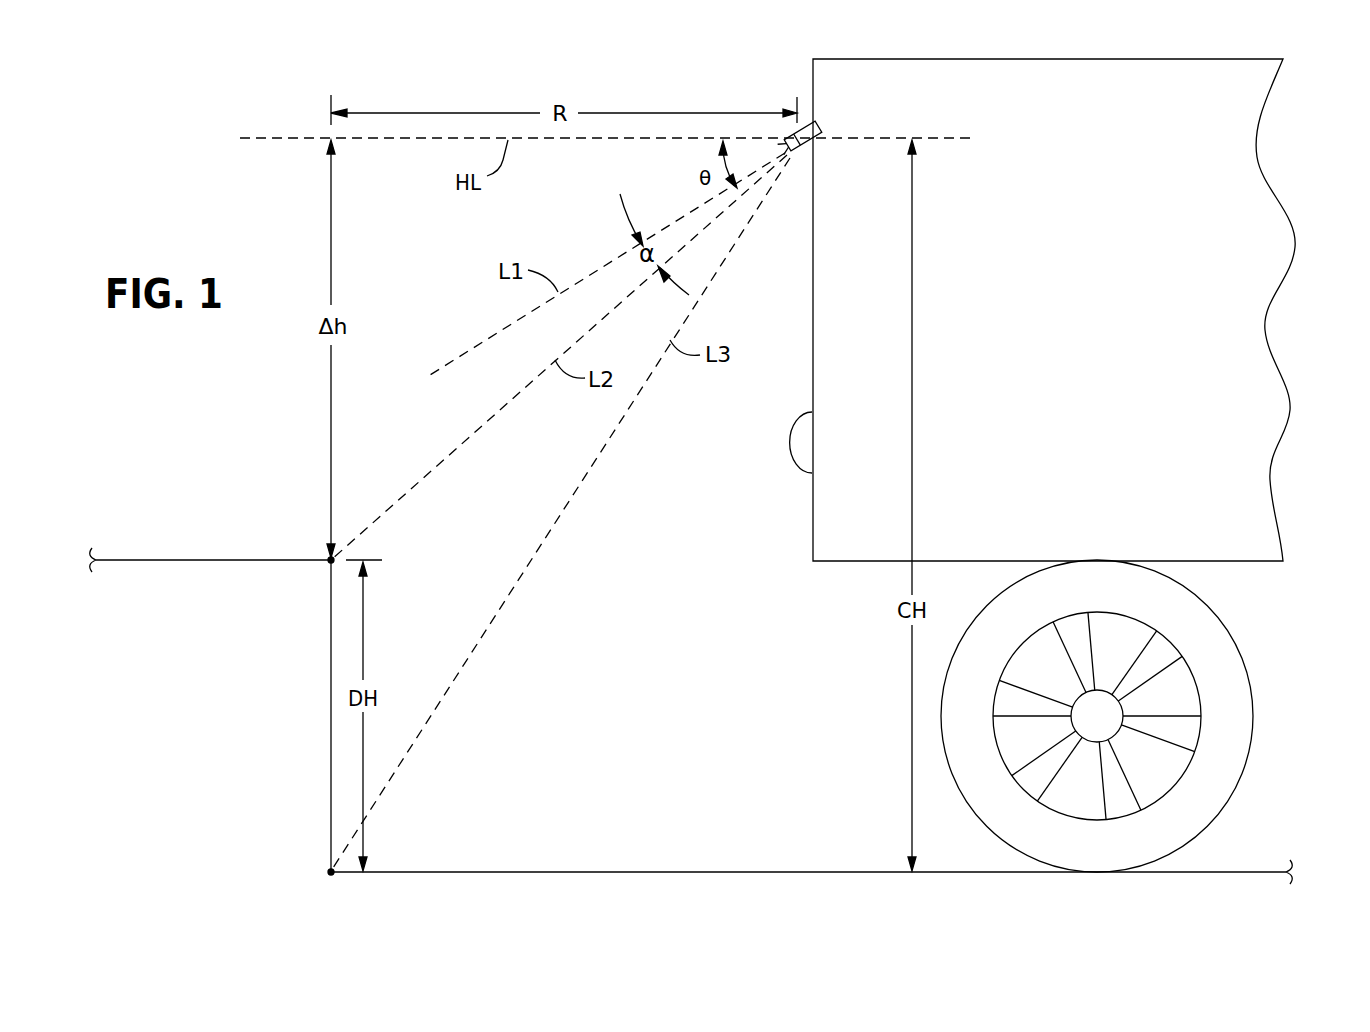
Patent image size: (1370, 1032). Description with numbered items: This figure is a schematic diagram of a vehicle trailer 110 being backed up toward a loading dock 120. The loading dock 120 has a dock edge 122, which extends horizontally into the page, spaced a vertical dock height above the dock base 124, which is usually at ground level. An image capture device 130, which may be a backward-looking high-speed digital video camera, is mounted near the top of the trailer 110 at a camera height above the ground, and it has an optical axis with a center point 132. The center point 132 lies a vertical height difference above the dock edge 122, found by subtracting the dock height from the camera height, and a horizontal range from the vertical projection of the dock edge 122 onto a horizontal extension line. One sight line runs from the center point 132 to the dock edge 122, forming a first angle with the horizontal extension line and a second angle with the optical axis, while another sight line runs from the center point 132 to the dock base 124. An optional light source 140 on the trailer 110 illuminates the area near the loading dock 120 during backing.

The vehicle trailer 110 is at (1230, 112).
The loading dock 120 is at (180, 582).
The dock edge 122 is at (330, 558).
The dock base 124 is at (333, 876).
The image capture device 130 is at (815, 124).
The center point 132 is at (802, 152).
The light source 140 is at (792, 456).